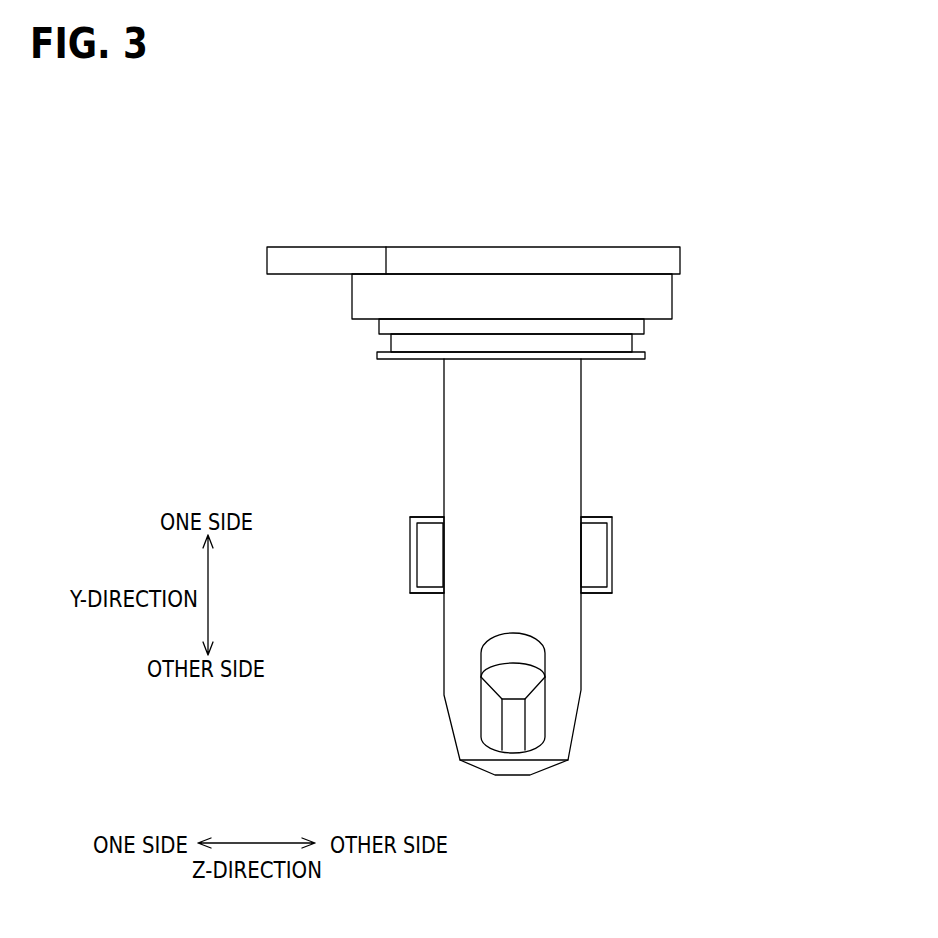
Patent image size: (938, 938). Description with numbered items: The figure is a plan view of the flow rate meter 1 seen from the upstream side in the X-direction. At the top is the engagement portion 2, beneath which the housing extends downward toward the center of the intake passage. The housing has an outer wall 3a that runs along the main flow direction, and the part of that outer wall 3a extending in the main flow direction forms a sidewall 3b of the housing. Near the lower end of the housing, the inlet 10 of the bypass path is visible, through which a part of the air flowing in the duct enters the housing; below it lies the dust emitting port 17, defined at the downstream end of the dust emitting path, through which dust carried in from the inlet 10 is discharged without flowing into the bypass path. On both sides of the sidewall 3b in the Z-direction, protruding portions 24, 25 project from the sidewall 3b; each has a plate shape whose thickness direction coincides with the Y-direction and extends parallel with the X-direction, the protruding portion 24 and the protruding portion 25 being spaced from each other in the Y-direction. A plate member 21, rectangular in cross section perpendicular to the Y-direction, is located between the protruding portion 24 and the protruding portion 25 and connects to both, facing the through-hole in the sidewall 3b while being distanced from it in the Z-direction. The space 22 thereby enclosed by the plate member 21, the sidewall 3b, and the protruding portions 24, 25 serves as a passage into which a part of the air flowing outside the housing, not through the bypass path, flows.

The flow rate meter 1 is at (760, 254).
The engagement portion 2 is at (636, 357).
The sidewall 3b is at (444, 450).
The outer wall 3a is at (512, 567).
The inlet 10 is at (538, 720).
The dust emitting port 17 is at (512, 732).
The plate member 21 is at (412, 555).
The space 22 is at (435, 547).
The protruding portion 24 is at (428, 522).
The protruding portion 25 is at (423, 592).